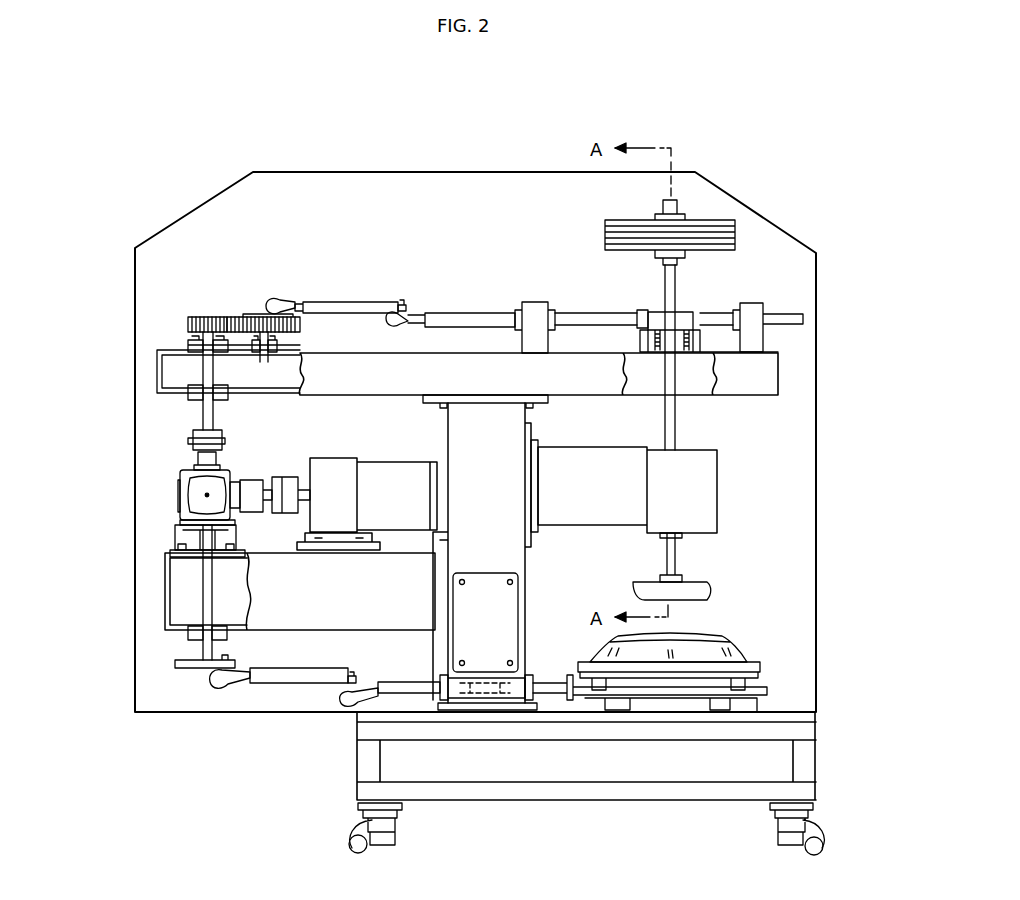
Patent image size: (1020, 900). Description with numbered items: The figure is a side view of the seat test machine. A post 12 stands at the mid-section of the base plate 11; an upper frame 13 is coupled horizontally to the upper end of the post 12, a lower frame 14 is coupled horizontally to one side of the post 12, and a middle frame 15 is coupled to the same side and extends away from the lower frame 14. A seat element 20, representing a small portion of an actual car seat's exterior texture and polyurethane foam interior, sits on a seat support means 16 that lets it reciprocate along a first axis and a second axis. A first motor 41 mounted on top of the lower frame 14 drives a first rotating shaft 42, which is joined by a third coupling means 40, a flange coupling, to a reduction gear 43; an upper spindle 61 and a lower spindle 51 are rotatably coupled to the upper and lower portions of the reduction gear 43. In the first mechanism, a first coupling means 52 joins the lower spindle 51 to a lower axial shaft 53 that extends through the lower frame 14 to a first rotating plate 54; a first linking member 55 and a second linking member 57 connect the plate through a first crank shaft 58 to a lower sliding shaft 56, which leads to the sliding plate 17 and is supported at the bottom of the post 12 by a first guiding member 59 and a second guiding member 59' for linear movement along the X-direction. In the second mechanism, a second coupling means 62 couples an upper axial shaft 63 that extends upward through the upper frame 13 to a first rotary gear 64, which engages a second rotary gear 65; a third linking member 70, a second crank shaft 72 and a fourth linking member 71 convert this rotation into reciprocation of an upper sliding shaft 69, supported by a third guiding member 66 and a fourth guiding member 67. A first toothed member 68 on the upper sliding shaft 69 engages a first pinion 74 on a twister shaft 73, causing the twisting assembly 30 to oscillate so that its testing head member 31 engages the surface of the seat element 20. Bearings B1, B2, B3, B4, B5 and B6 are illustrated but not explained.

The base plate 11 is at (598, 718).
The post 12 is at (450, 437).
The upper frame 13 is at (582, 370).
The lower frame 14 is at (178, 588).
The middle frame 15 is at (705, 488).
The seat support means 16 is at (780, 688).
The sliding plate 17 is at (672, 697).
The seat element 20 is at (705, 650).
The twisting assembly 30 is at (705, 570).
The testing head member 31 is at (700, 590).
The third coupling means 40 is at (268, 488).
The first motor 41 is at (333, 470).
The first rotating shaft 42 is at (285, 480).
The reduction gear 43 is at (178, 495).
The lower spindle 51 is at (185, 520).
The first coupling means 52 is at (195, 533).
The lower axial shaft 53 is at (205, 613).
The first rotating plate 54 is at (192, 668).
The first linking member 55 is at (226, 683).
The lower sliding shaft 56 is at (405, 688).
The second linking member 57 is at (350, 692).
The first crank shaft 58 is at (262, 683).
The first guiding member 59 is at (476, 773).
The second guiding member 59' is at (534, 773).
The upper spindle 61 is at (205, 462).
The second coupling means 62 is at (195, 442).
The upper axial shaft 63 is at (207, 410).
The first rotary gear 64 is at (205, 315).
The second rotary gear 65 is at (238, 315).
The third guiding member 66 is at (532, 302).
The fourth guiding member 67 is at (757, 305).
The first toothed member 68 is at (702, 318).
The upper sliding shaft 69 is at (486, 314).
The third linking member 70 is at (278, 298).
The fourth linking member 71 is at (413, 318).
The second crank shaft 72 is at (362, 302).
The twister shaft 73 is at (672, 430).
The first pinion 74 is at (690, 312).
The bearing B1 is at (190, 633).
The bearing B2 is at (180, 552).
The bearing B3 is at (170, 390).
The bearing B4 is at (190, 345).
The bearing B5 is at (280, 347).
The bearing B6 is at (755, 355).